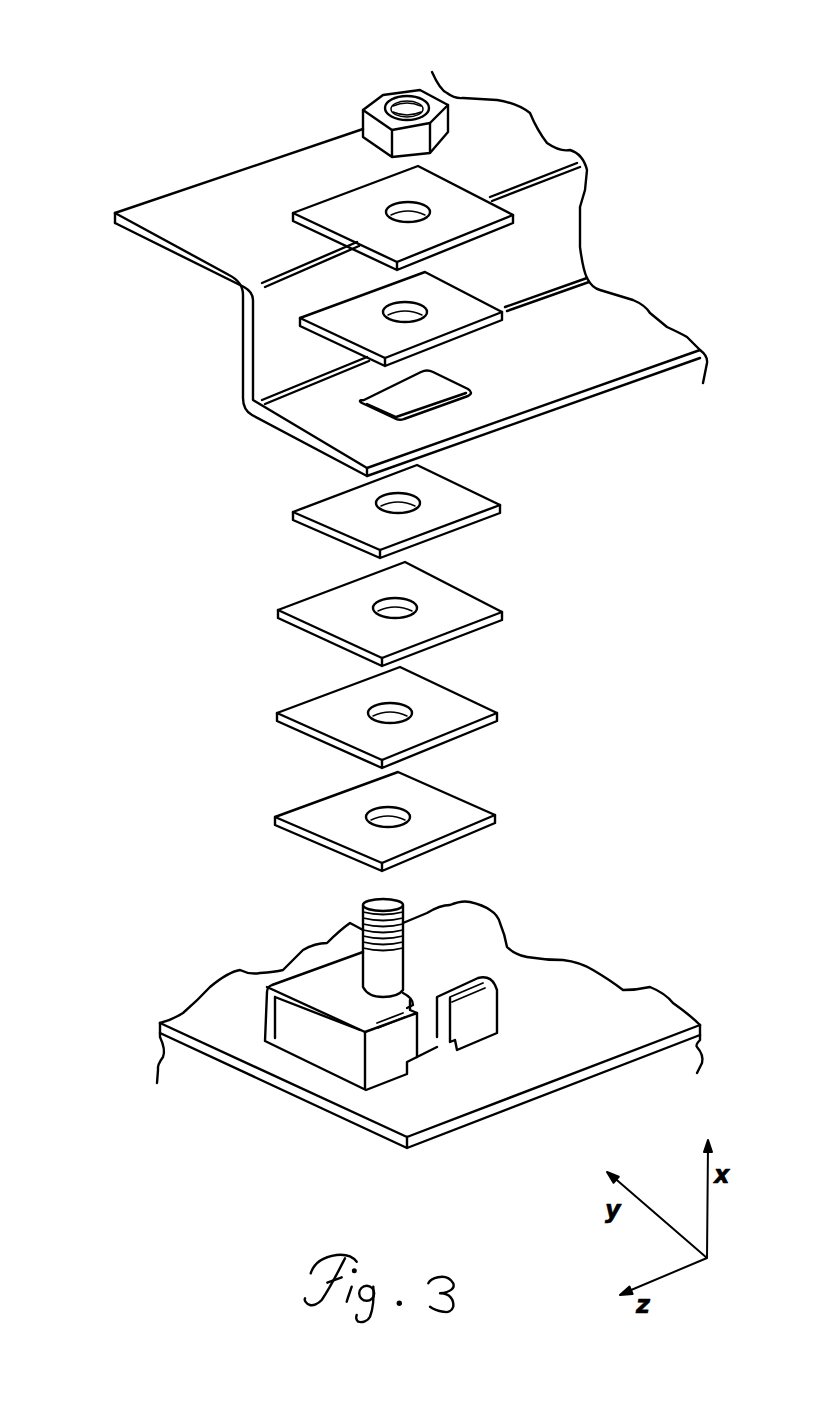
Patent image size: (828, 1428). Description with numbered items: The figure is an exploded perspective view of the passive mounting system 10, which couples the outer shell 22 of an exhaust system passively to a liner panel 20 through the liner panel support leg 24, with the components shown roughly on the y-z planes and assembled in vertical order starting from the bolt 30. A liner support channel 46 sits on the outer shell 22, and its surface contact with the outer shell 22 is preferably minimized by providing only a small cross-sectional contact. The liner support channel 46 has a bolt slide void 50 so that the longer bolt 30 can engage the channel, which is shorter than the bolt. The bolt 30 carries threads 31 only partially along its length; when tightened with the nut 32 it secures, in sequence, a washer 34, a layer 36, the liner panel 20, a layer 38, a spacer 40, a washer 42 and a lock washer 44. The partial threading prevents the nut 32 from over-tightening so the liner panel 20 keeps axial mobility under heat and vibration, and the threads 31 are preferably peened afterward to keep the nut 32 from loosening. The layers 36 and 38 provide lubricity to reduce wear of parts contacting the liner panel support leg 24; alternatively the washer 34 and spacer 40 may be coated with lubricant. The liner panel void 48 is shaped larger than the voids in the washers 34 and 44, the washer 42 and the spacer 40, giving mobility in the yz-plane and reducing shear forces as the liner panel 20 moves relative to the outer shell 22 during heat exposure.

The passive mounting system 10 is at (230, 582).
The liner panel 20 is at (232, 215).
The outer shell 22 is at (270, 1078).
The liner panel support leg 24 is at (588, 397).
The bolt 30 is at (393, 970).
The threads 31 is at (365, 927).
The nut 32 is at (363, 107).
The washer 34 is at (445, 195).
The layer 36 is at (462, 303).
The layer 38 is at (435, 509).
The spacer 40 is at (445, 613).
The washer 42 is at (448, 715).
The lock washer 44 is at (442, 812).
The liner support channel 46 is at (478, 1010).
The liner panel void 48 is at (425, 400).
The bolt slide void 50 is at (433, 1052).